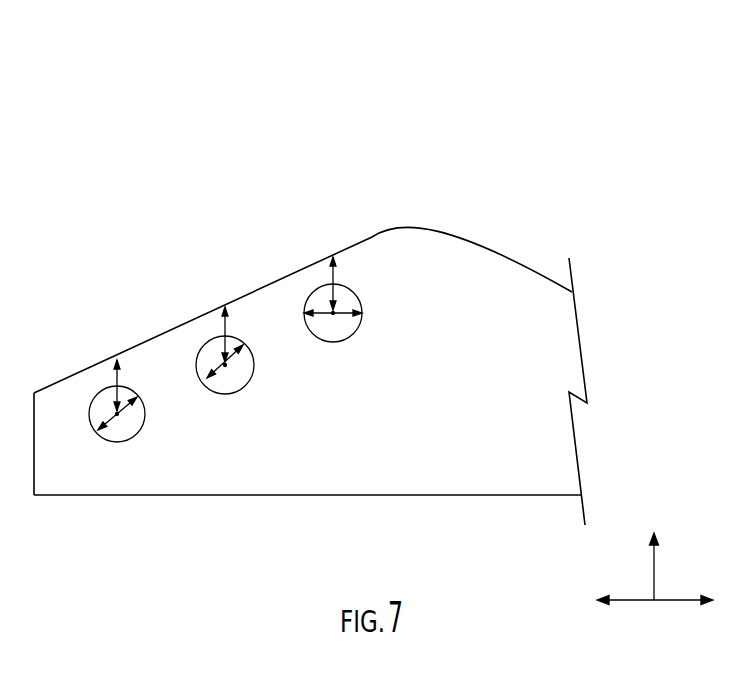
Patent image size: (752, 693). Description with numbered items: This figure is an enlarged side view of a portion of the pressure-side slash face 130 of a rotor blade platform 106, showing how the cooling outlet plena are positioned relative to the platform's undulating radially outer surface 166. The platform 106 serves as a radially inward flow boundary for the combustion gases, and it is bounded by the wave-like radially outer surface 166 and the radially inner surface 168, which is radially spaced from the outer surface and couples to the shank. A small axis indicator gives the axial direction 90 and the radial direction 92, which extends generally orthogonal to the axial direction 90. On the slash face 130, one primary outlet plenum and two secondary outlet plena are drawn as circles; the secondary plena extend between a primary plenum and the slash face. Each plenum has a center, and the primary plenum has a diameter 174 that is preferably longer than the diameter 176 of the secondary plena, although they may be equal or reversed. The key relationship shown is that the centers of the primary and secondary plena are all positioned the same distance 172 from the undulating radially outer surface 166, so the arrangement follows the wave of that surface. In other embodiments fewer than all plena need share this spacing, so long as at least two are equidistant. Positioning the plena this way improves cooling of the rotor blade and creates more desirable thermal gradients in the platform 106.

The platform 106 is at (310, 292).
The radially outer surface 166 is at (372, 237).
The radially inner surface 168 is at (446, 495).
The pressure-side slash face 130 is at (547, 415).
The distance 172 is at (113, 373).
The diameter of primary cooling plena 174 is at (335, 315).
The diameter of secondary cooling plena 176 is at (117, 414).
The axial direction 90 is at (634, 600).
The radial direction 92 is at (655, 562).